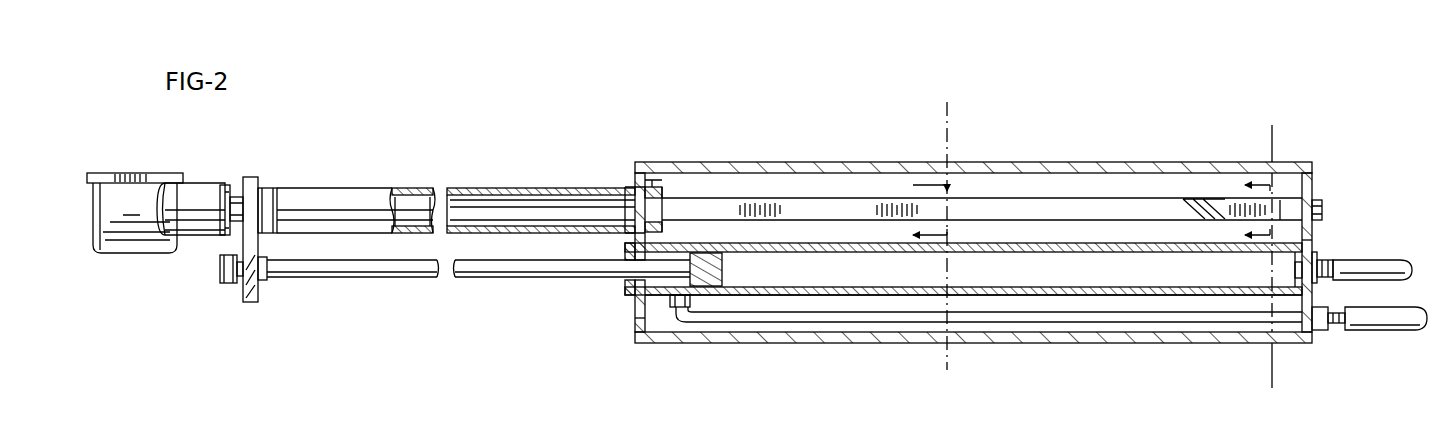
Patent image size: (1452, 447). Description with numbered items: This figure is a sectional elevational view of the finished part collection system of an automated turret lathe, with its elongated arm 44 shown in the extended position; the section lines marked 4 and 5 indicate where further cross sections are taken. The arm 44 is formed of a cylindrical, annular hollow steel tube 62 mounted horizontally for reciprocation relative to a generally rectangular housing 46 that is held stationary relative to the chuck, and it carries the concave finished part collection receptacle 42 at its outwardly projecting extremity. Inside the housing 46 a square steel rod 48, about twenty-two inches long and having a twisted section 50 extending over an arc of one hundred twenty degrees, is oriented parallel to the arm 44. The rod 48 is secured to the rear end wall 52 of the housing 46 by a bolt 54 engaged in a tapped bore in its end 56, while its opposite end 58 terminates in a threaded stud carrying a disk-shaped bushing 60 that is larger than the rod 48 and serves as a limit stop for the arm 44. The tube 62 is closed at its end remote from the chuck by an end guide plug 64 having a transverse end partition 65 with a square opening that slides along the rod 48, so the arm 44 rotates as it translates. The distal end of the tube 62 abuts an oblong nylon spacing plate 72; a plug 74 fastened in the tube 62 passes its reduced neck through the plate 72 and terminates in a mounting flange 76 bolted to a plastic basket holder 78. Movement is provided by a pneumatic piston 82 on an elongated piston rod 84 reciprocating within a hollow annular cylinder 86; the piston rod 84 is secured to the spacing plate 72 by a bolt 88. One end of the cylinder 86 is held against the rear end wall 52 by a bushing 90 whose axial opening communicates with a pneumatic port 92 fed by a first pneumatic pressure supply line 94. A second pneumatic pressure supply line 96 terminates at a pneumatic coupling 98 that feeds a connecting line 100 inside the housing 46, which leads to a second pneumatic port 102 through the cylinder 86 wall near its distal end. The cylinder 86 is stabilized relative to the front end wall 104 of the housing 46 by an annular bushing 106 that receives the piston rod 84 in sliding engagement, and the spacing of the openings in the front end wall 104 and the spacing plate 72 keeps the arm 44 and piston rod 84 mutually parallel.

The finished part collection receptacle 42 is at (100, 218).
The elongated arm 44 is at (425, 188).
The housing 46 is at (812, 165).
The rod 48 is at (1048, 199).
The twisted section 50 is at (1185, 199).
The rear end wall 52 is at (1313, 243).
The bolt 54 is at (1320, 210).
The end of the rod 56 is at (1280, 200).
The opposite end of the rod 58 is at (684, 212).
The disk-shaped bushing 60 is at (617, 210).
The hollow steel tube 62 is at (413, 188).
The end guide plug 64 is at (657, 180).
The transverse end partition 65 is at (672, 185).
The spacing plate 72 is at (255, 292).
The plug 74 is at (242, 196).
The mounting flange 76 is at (227, 225).
The basket holder 78 is at (190, 225).
The pneumatic piston 82 is at (725, 268).
The piston rod 84 is at (420, 278).
The cylinder 86 is at (995, 295).
The bolt 88 is at (228, 283).
The bushing 90 is at (1315, 282).
The pneumatic port 92 is at (1295, 272).
The first pneumatic pressure supply line 94 is at (1370, 262).
The second pneumatic pressure supply line 96 is at (1393, 315).
The pneumatic coupling 98 is at (1318, 322).
The connecting line 100 is at (1145, 322).
The second pneumatic port 102 is at (667, 300).
The front end wall 104 is at (636, 318).
The annular bushing 106 is at (630, 290).
The section line 4- 4 is at (944, 237).
The section line 5- 5 is at (1271, 256).